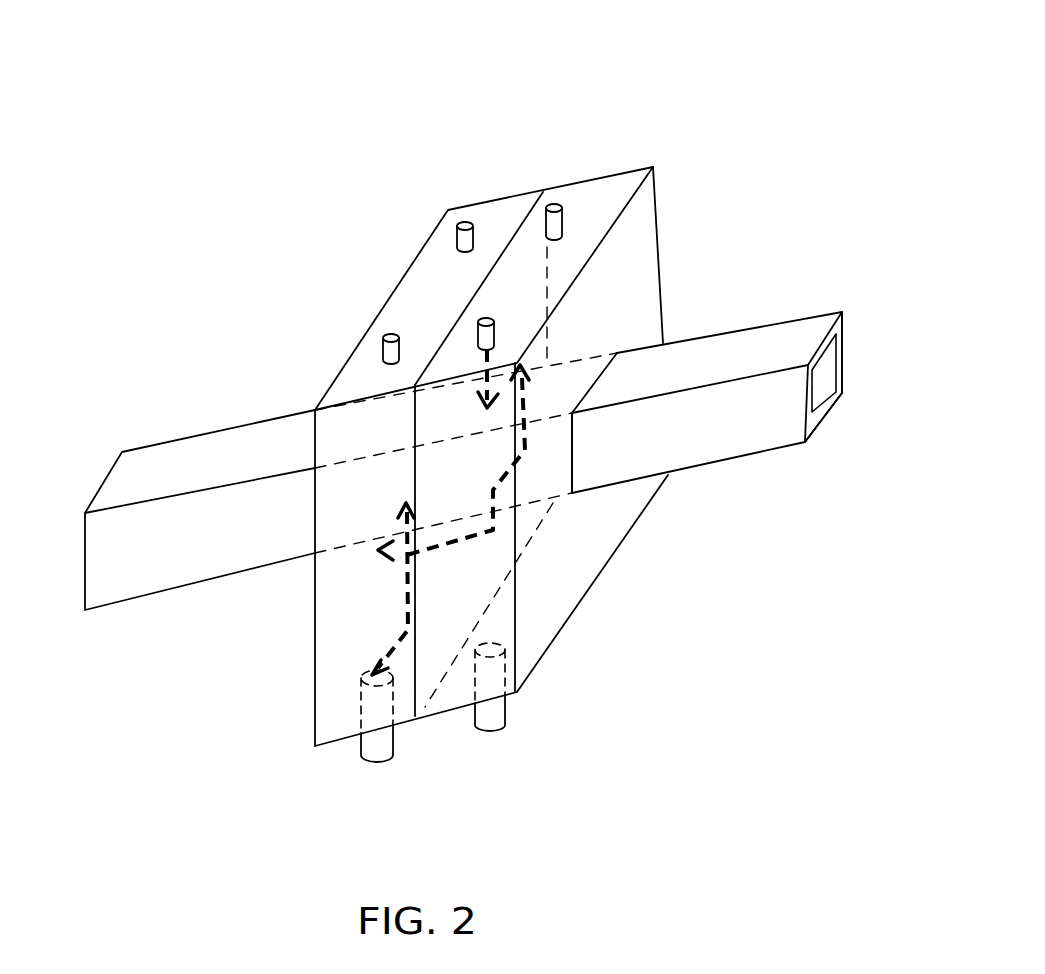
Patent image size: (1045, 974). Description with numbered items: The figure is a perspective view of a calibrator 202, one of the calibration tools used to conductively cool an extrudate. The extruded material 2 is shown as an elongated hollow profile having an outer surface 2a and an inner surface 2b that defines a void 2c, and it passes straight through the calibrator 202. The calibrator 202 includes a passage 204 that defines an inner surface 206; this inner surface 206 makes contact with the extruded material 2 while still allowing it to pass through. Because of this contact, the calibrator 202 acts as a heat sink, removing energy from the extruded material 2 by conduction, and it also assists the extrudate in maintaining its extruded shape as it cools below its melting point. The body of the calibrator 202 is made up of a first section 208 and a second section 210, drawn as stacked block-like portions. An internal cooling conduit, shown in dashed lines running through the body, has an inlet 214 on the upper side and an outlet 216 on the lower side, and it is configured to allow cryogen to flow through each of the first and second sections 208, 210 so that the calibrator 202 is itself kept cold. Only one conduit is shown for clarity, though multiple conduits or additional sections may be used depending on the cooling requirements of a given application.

The extruded material 2 is at (767, 322).
The outer surface 2a is at (820, 425).
The inner surface 2b is at (838, 396).
The void 2c is at (823, 367).
The calibrator 202 is at (757, 88).
The passage 204 is at (560, 462).
The inner surface 206 is at (613, 362).
The first section 208 is at (608, 177).
The second section 210 is at (492, 197).
The inlet 214 is at (490, 312).
The outlet 216 is at (380, 765).